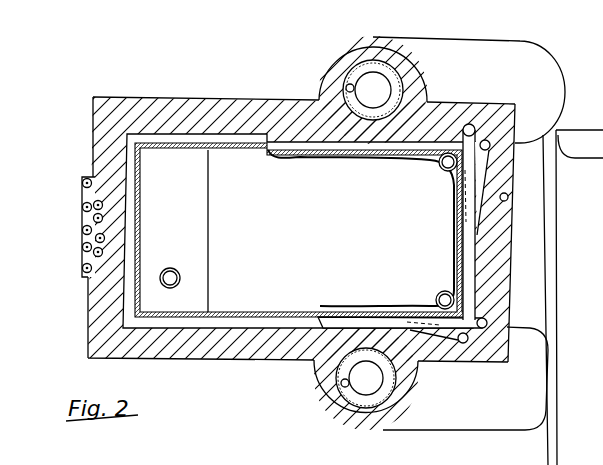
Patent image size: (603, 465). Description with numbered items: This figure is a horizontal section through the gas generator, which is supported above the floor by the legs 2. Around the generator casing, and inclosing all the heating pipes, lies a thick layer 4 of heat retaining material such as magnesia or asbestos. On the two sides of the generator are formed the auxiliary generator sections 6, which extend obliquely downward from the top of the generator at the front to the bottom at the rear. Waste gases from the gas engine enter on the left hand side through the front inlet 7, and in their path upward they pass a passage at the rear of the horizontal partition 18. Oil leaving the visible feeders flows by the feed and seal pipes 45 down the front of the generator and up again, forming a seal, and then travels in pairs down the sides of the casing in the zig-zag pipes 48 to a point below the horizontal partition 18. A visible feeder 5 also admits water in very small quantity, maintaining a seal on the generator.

The legs 2 is at (528, 157).
The layer of heat retaining material 4 is at (165, 110).
The visible feeder 5 is at (85, 229).
The auxiliary generator sections 6 is at (440, 37).
The front inlet 7 is at (255, 99).
The horizontal partition 18 is at (308, 231).
The feed and seal pipes 45 is at (82, 183).
The zig-zag oil pipes 48 is at (463, 343).